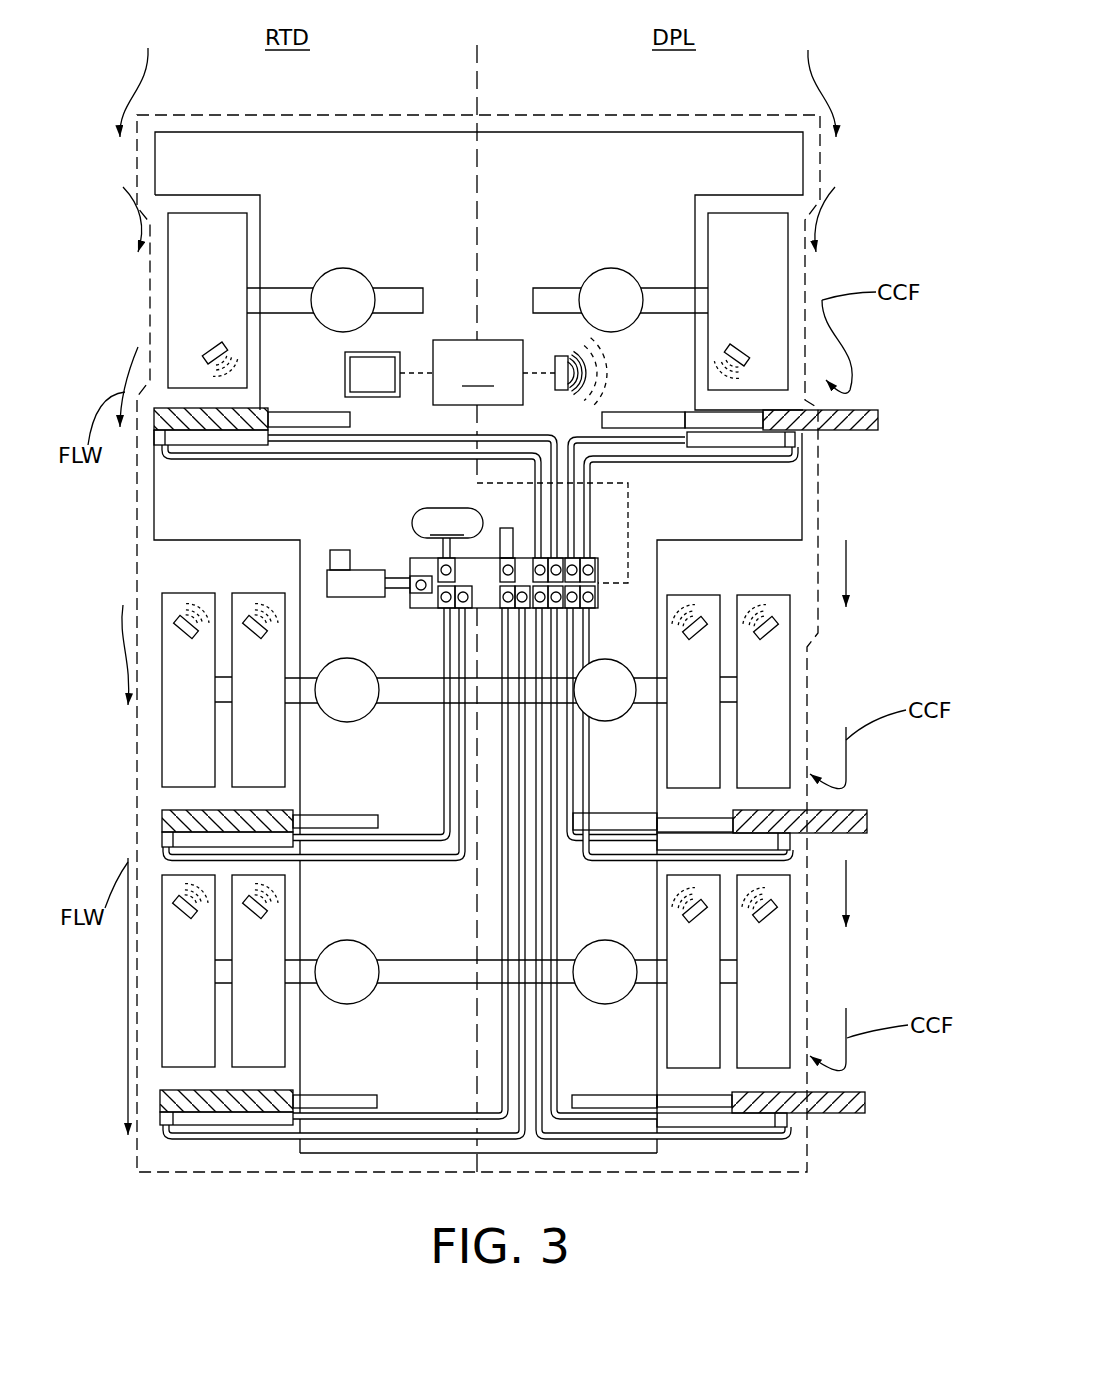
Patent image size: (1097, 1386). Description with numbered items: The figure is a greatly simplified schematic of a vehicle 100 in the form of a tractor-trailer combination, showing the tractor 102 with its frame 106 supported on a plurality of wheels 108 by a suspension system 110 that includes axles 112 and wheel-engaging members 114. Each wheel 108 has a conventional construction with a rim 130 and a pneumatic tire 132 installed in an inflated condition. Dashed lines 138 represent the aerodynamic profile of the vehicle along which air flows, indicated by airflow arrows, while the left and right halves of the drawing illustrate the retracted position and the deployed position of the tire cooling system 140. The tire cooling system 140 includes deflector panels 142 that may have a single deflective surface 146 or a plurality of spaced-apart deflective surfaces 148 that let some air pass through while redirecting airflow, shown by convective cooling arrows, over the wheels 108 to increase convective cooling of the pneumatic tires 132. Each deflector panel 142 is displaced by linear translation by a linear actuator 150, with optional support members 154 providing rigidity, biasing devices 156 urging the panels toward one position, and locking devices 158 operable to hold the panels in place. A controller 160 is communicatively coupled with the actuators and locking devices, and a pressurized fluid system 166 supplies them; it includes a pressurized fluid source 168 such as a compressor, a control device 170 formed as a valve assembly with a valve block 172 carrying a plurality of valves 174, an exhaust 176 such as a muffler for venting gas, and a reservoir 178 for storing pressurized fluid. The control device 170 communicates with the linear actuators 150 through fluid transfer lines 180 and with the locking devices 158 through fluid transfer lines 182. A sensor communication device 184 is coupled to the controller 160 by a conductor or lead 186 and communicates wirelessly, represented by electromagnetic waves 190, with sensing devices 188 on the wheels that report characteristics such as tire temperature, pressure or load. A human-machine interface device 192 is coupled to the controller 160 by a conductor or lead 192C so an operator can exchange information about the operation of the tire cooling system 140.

The vehicle 100 is at (887, 105).
The tractor 102 is at (858, 208).
The frame 106 is at (335, 1156).
The wheels 108 is at (503, 617).
The suspension system 110 is at (300, 152).
The axles 112 is at (412, 690).
The wheel-engaging members 114 is at (283, 296).
The rim 130 is at (503, 617).
The pneumatic tire 132 is at (248, 232).
The aerodynamic profile 138 is at (478, 112).
The tire cooling system 140 is at (840, 262).
The deflector panel 142 is at (880, 420).
The deflective surface 146 is at (262, 405).
The deflective surfaces 148 is at (200, 426).
The linear actuator 150 is at (232, 446).
The support members 154 is at (775, 447).
The biasing devices 156 is at (330, 427).
The locking devices 158 is at (156, 440).
The controller 160 is at (478, 372).
The pressurized fluid system 166 is at (413, 505).
The pressurized fluid source 168 is at (357, 598).
The control device 170 is at (405, 602).
The valve block 172 is at (410, 560).
The valves 174 is at (600, 595).
The exhaust 176 is at (507, 528).
The reservoir 178 is at (447, 533).
The fluid transfer lines 180 is at (445, 436).
The fluid transfer lines 182 is at (405, 460).
The sensor communication device 184 is at (562, 356).
The conductor or lead 186 is at (538, 372).
The sensing devices 188 is at (215, 343).
The electromagnetic waves 190 is at (250, 366).
The human-machine interface device 192 is at (372, 352).
The conductor or lead 192C is at (418, 372).